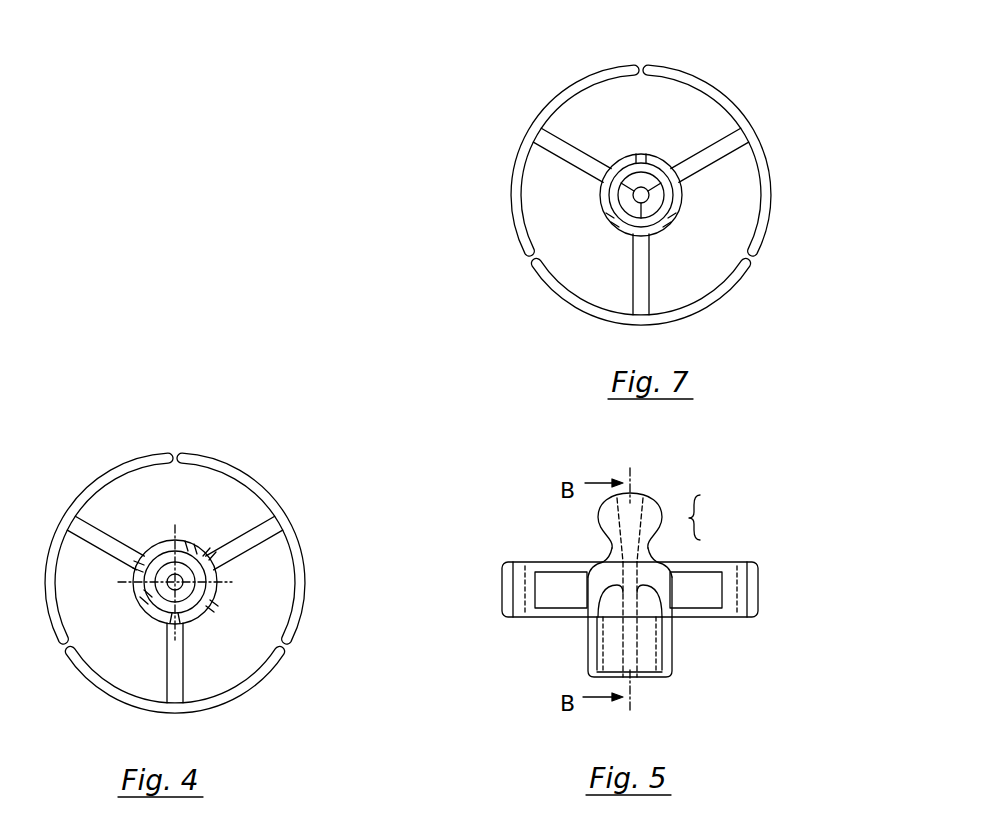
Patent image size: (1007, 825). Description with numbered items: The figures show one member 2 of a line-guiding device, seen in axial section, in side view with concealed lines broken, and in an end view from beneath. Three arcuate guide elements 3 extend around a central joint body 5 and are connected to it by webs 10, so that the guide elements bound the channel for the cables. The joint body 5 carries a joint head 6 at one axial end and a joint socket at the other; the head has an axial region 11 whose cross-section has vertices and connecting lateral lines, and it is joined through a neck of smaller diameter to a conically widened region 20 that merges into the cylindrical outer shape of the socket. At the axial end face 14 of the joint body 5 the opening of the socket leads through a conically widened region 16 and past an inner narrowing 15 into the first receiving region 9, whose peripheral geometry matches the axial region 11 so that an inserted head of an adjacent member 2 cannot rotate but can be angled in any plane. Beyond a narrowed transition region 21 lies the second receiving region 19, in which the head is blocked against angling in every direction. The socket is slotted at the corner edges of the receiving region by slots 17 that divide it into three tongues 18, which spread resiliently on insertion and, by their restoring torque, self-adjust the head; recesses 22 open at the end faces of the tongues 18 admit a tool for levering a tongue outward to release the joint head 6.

In FIG. 4, the member 2 is at (222, 428).
In FIG. 4, the guide element 3 is at (103, 482).
In FIG. 7, the guide element 3 is at (575, 93).
In FIG. 5, the guide element 3 is at (523, 568).
In FIG. 4, the central joint body 5 is at (217, 593).
In FIG. 5, the joint head 6 is at (648, 493).
In FIG. 5, the first receiving region 9 is at (640, 645).
In FIG. 4, the web 10 is at (113, 545).
In FIG. 7, the web 10 is at (575, 163).
In FIG. 5, the axial region 11 is at (715, 517).
In FIG. 7, the axial end face 14 is at (618, 162).
In FIG. 5, the axial end face 14 is at (647, 680).
In FIG. 5, the narrowing 15 is at (670, 667).
In FIG. 5, the conically widened region 16 is at (595, 670).
In FIG. 4, the slot 17 is at (217, 548).
In FIG. 4, the tongue 18 is at (185, 540).
In FIG. 5, the second receiving region 19 is at (640, 627).
In FIG. 5, the conically widened region 20 is at (602, 567).
In FIG. 5, the narrowed transition region 21 is at (600, 634).
In FIG. 7, the recess 22 is at (643, 160).